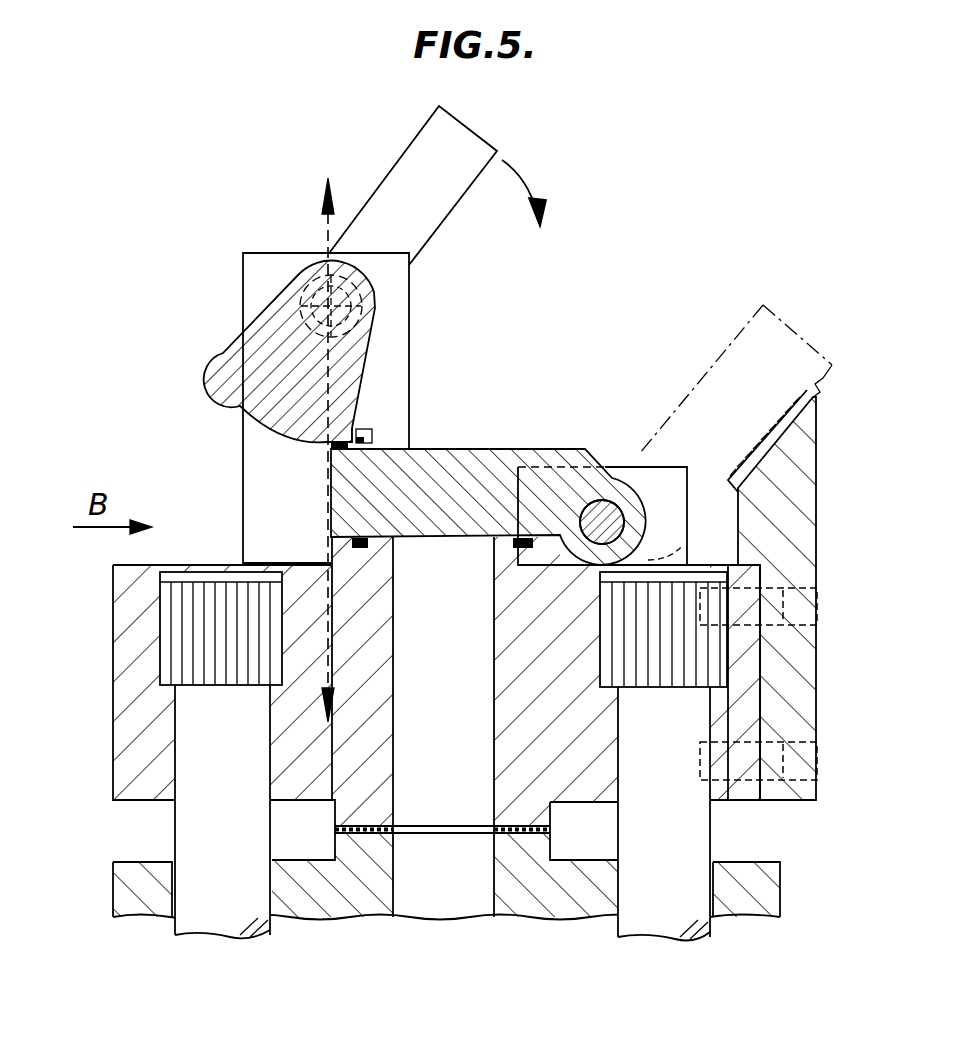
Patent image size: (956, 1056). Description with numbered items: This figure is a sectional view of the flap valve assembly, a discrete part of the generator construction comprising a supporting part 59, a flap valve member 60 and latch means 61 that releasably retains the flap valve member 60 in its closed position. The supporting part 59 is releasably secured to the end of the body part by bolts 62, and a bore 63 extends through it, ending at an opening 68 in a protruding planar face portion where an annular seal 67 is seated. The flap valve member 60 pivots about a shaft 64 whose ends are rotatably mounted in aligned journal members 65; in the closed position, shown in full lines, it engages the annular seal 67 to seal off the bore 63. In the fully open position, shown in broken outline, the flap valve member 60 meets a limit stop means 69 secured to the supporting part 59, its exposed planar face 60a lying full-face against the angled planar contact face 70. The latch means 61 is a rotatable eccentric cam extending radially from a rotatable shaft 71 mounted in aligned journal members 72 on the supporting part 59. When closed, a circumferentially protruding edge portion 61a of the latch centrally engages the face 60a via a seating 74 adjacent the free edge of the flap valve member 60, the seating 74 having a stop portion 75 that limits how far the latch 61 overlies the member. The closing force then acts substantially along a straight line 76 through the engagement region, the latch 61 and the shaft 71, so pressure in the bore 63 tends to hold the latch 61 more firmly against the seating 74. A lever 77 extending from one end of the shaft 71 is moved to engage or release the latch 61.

The supporting part 59 is at (290, 720).
The flap valve member 60 is at (345, 497).
The exposed planar face of the flap valve member 60a is at (483, 452).
The latch means 61 is at (262, 332).
The circumferentially protruding edge portion of the latch 61a is at (353, 423).
The bolts 62 is at (246, 812).
The bore 63 is at (463, 733).
The shaft 64 is at (604, 508).
The journal members 65 is at (660, 480).
The annular seal 67 is at (495, 570).
The opening 68 is at (396, 540).
The limit stop means 69 is at (797, 790).
The planar contact face 70 is at (792, 402).
The rotatable shaft 71 is at (372, 302).
The journal members 72 is at (255, 261).
The seating 74 is at (331, 462).
The stop portion 75 is at (368, 437).
The straight line 76 is at (332, 637).
The lever 77 is at (425, 225).